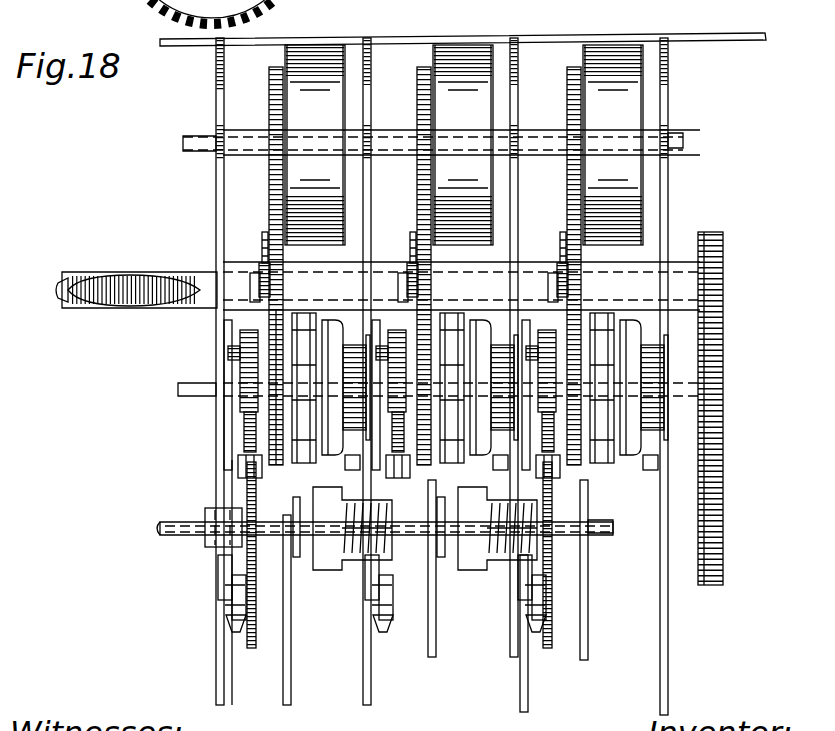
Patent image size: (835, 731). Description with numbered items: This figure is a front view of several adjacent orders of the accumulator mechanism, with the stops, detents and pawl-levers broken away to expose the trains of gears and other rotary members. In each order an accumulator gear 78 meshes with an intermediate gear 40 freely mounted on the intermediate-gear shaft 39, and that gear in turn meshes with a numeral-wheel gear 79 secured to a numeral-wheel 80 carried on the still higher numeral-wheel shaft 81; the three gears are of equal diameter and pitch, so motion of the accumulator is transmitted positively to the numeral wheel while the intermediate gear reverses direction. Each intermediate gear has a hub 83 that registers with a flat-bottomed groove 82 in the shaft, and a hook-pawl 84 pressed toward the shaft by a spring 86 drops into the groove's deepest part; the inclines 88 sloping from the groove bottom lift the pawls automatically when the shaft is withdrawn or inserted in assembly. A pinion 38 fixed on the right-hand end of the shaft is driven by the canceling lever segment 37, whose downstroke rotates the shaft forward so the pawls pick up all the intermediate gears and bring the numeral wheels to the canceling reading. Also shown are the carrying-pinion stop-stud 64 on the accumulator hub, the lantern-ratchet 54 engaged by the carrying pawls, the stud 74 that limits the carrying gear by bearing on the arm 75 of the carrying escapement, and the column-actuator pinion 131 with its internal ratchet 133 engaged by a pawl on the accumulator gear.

The canceling lever segment 37 is at (726, 412).
The pinion 38 is at (723, 235).
The intermediate-gear shaft 39 is at (66, 297).
The intermediate gear 40 is at (280, 283).
The lantern-ratchet 54 is at (305, 463).
The stop-stud 64 is at (232, 352).
The stud 74 is at (222, 562).
The arm of the carrying escapement 75 is at (363, 560).
The accumulator gear 78 is at (283, 466).
The numeral-wheel gear 79 is at (270, 183).
The numeral-wheel 80 is at (436, 55).
The numeral-wheel shaft 81 is at (684, 138).
The groove 82 is at (118, 272).
The hub 83 is at (461, 286).
The hook-pawl 84 is at (262, 265).
The spring 86 is at (416, 240).
The incline 88 is at (148, 302).
The pinion 131 is at (348, 345).
The ratchet 133 is at (335, 455).